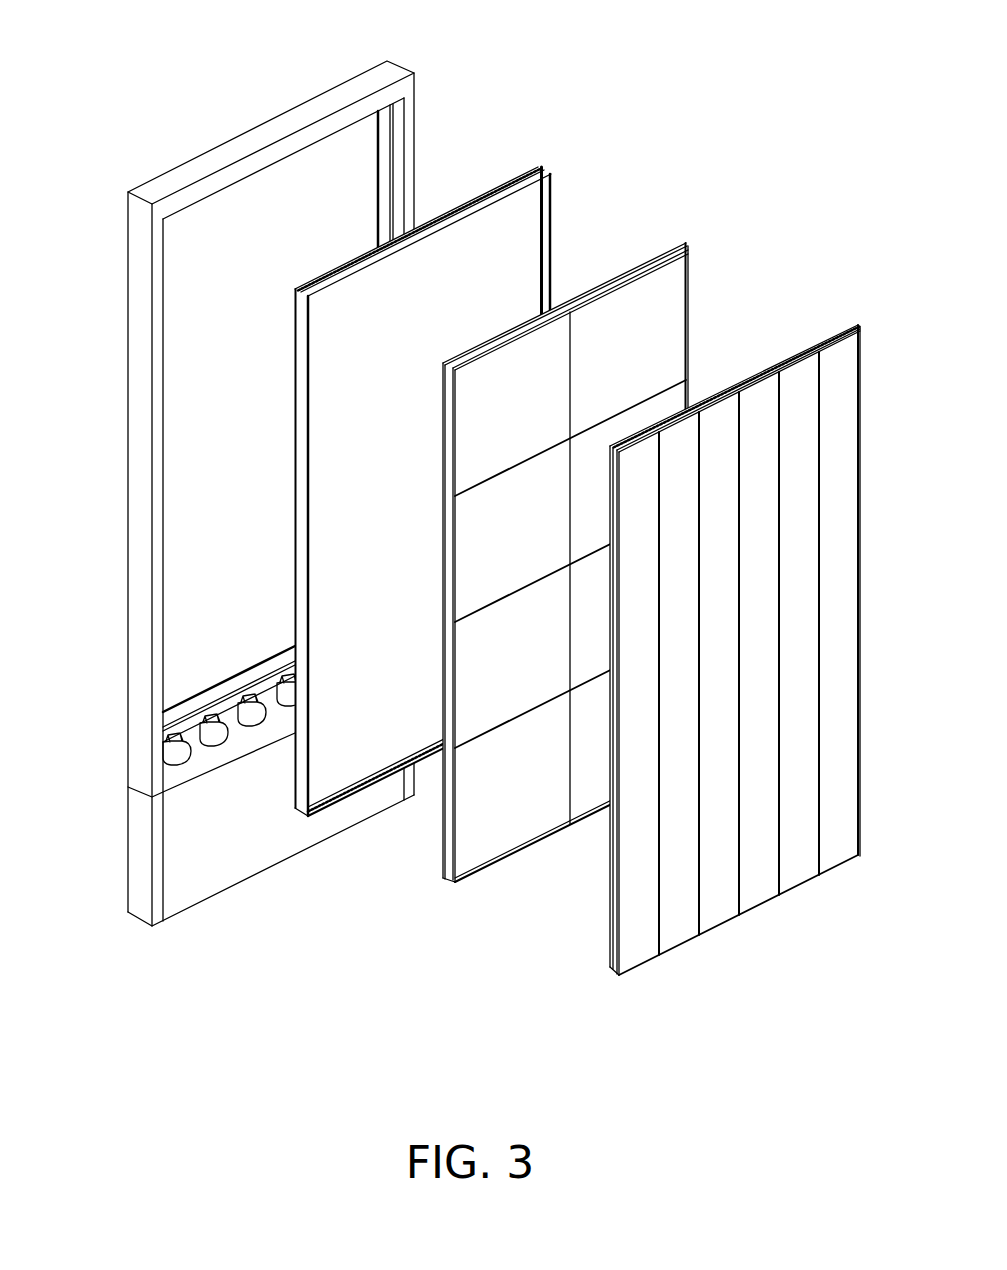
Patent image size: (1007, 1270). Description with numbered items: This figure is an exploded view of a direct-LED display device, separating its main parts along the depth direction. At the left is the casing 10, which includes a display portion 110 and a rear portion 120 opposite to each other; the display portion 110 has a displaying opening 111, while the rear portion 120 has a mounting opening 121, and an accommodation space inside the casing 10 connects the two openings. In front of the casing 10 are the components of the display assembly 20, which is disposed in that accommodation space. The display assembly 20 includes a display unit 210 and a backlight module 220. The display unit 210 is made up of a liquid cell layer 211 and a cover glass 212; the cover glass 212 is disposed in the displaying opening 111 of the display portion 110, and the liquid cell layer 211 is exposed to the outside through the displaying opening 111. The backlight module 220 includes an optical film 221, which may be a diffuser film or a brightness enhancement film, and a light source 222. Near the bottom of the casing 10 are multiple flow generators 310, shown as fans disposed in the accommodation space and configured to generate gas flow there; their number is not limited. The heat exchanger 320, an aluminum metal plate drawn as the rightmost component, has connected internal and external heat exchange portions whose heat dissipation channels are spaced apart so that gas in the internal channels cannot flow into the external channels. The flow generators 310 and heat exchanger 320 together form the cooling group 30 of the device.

The casing 10 is at (421, 97).
The display portion 110 is at (128, 320).
The displaying opening 111 is at (377, 156).
The rear portion 120 is at (158, 340).
The mounting opening 121 is at (403, 148).
The display assembly 20 is at (799, 188).
The display unit 210 is at (566, 180).
The liquid cell layer 211 is at (307, 508).
The cover glass 212 is at (297, 427).
The backlight module 220 is at (702, 236).
The optical film 221 is at (627, 270).
The light source 222 is at (667, 260).
The mounting assembly 30 is at (460, 1035).
The flow generators 310 is at (193, 768).
The heat exchanger 320 is at (599, 942).